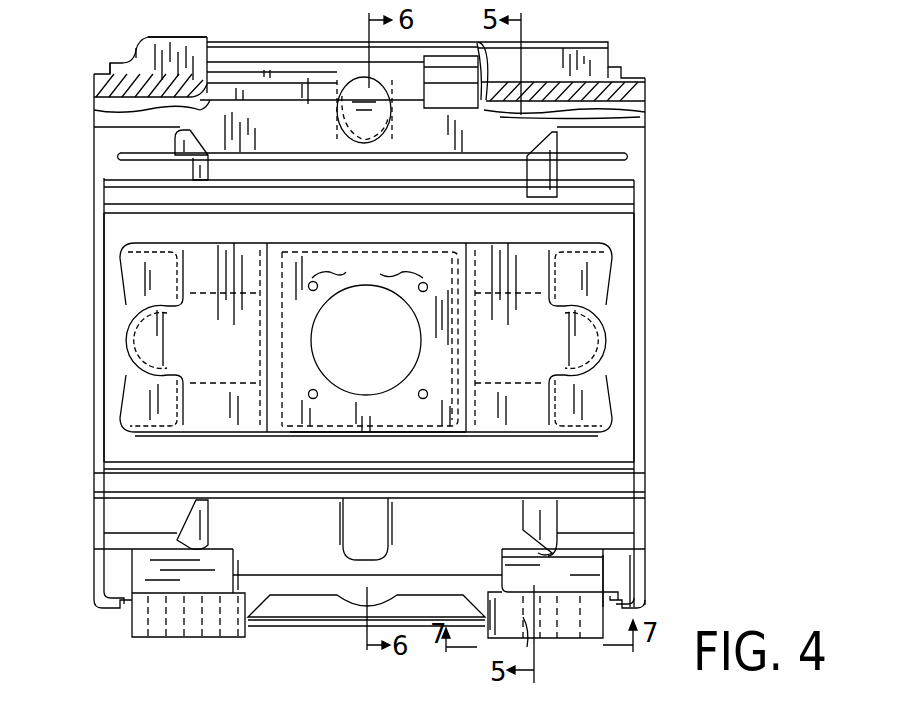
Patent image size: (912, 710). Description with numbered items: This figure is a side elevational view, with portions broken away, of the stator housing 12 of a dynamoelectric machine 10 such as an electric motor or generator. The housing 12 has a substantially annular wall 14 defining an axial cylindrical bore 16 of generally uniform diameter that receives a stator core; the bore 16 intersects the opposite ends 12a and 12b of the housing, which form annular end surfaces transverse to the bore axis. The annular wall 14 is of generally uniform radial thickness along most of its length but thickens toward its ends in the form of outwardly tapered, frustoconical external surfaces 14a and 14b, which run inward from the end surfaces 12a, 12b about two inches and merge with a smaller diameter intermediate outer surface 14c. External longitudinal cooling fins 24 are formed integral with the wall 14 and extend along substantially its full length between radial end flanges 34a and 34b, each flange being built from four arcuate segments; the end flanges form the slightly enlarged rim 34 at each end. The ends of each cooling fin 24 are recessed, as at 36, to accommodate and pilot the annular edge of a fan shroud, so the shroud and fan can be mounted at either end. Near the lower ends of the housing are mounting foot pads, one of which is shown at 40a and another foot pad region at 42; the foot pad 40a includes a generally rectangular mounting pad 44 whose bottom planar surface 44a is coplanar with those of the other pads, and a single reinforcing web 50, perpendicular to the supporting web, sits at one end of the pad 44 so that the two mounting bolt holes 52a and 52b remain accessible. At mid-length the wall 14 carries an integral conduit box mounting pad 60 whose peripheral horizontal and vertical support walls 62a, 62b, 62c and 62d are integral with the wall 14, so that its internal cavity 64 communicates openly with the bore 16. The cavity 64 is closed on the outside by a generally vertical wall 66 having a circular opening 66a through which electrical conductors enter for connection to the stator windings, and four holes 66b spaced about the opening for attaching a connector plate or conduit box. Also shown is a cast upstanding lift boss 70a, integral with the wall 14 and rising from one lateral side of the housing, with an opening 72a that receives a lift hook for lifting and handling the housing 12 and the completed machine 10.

The dynamoelectric machine 10 is at (698, 74).
The stator housing 12 is at (652, 165).
The end of housing 12a is at (647, 377).
The end of housing 12b is at (93, 388).
The annular wall 14 is at (642, 90).
The outwardly tapered end surface 14a is at (602, 78).
The outwardly tapered end surface 14b is at (144, 56).
The intermediate outer surface 14c is at (478, 48).
The axial bore 16 is at (646, 116).
The cooling fins 24 is at (149, 42).
The bottom plate 34 is at (366, 652).
The end flange 34a is at (634, 612).
The end flange 34b is at (94, 604).
The recessed surface 36 is at (618, 66).
The mounting foot pad 40a is at (592, 646).
The left leg 42 is at (130, 640).
The mounting pad 44 is at (594, 608).
The bottom planar surface 44a is at (544, 640).
The reinforcing web 50 is at (500, 552).
The mounting bolt hole 52a is at (578, 640).
The mounting bolt hole 52b is at (522, 648).
The conduit box mounting pad 60 is at (292, 437).
The peripheral support wall 62a is at (374, 254).
The peripheral support wall 62b is at (406, 436).
The peripheral support wall 62c is at (548, 264).
The peripheral support wall 62d is at (268, 274).
The internal cavity 64 is at (350, 426).
The vertically disposed wall 66 is at (412, 424).
The circular opening 66a is at (366, 340).
The holes 66b is at (418, 390).
The lift boss 70a is at (320, 76).
The opening 72a is at (356, 80).